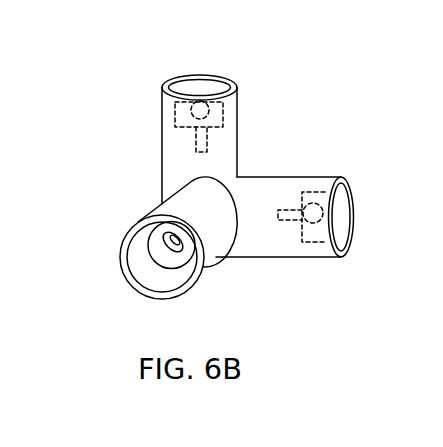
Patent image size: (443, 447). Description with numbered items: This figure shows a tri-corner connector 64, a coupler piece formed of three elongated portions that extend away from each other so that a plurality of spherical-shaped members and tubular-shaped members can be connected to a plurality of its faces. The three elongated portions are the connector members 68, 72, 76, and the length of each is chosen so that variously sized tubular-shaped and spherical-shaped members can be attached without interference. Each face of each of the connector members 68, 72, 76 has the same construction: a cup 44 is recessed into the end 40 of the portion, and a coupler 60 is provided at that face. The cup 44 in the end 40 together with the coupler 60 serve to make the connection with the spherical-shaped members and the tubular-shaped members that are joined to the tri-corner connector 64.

The end 40 is at (178, 75).
The cup 44 is at (172, 107).
The coupler 60 is at (207, 116).
The tri-corner connector 64 is at (310, 93).
The connector member 68 is at (138, 288).
The connector member 72 is at (352, 225).
The connector member 76 is at (210, 80).